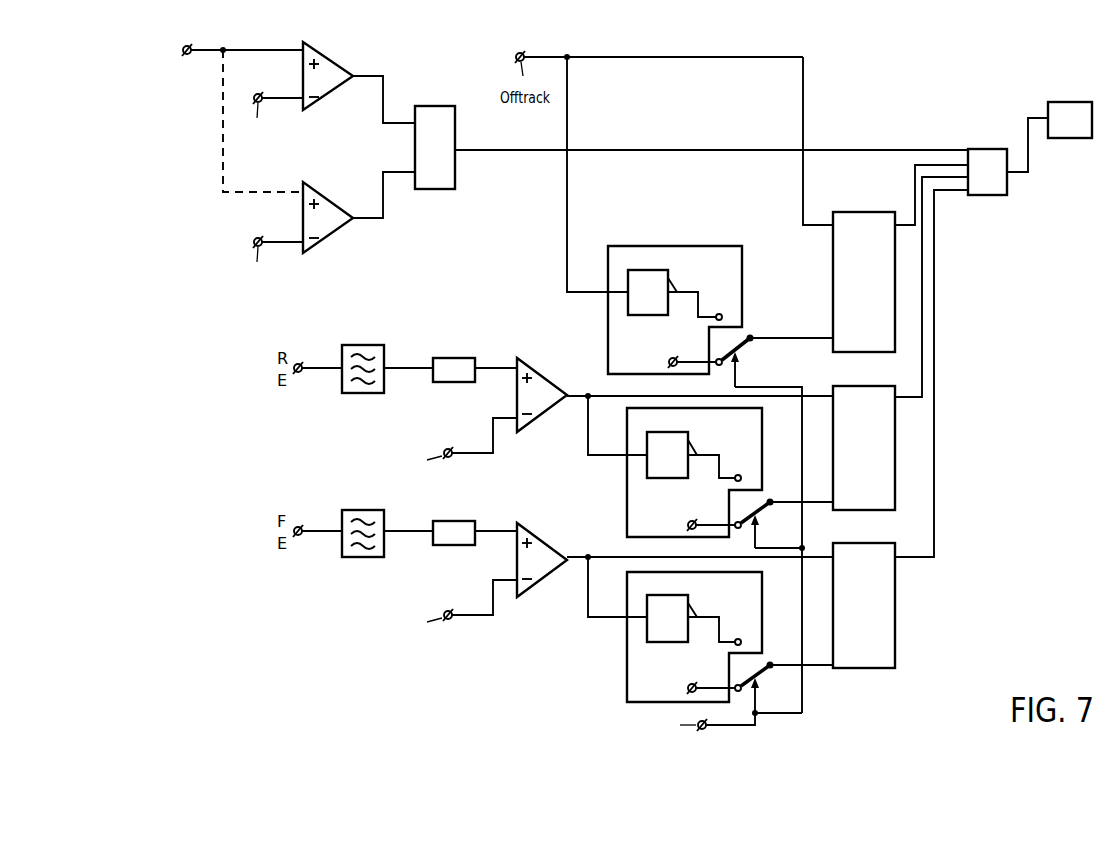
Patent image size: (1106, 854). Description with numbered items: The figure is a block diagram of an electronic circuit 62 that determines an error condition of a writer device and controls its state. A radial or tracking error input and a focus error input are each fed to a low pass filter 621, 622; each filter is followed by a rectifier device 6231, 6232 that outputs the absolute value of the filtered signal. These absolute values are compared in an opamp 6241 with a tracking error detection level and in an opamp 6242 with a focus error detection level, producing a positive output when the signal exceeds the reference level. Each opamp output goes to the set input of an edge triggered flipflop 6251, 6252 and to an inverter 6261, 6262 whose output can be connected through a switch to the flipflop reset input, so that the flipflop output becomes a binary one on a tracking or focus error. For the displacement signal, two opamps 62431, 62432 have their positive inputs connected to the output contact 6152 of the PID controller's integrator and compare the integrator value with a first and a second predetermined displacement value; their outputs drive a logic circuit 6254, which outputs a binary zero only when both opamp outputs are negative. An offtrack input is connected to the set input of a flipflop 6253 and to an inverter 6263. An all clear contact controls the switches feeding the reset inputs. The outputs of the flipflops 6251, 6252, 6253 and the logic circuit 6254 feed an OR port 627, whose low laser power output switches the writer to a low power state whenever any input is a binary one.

The electronic circuit 62 is at (236, 700).
The output contact of the integrator circuit 6152 is at (187, 55).
The opamp 62431 is at (333, 95).
The opamp 62432 is at (332, 238).
The logic circuit 6254 is at (437, 189).
The OR port 627 is at (988, 198).
The flipflop 6253 is at (833, 278).
The inverter 6263 is at (683, 246).
The low pass filter 621 is at (355, 393).
The rectifier device 6231 is at (448, 358).
The opamp 6241 is at (542, 372).
The low pass filter 622 is at (355, 557).
The rectifier device 6232 is at (448, 521).
The opamp 6242 is at (542, 535).
The inverter 6261 is at (627, 507).
The flipflop 6251 is at (895, 473).
The inverter 6262 is at (627, 667).
The flipflop 6252 is at (895, 620).